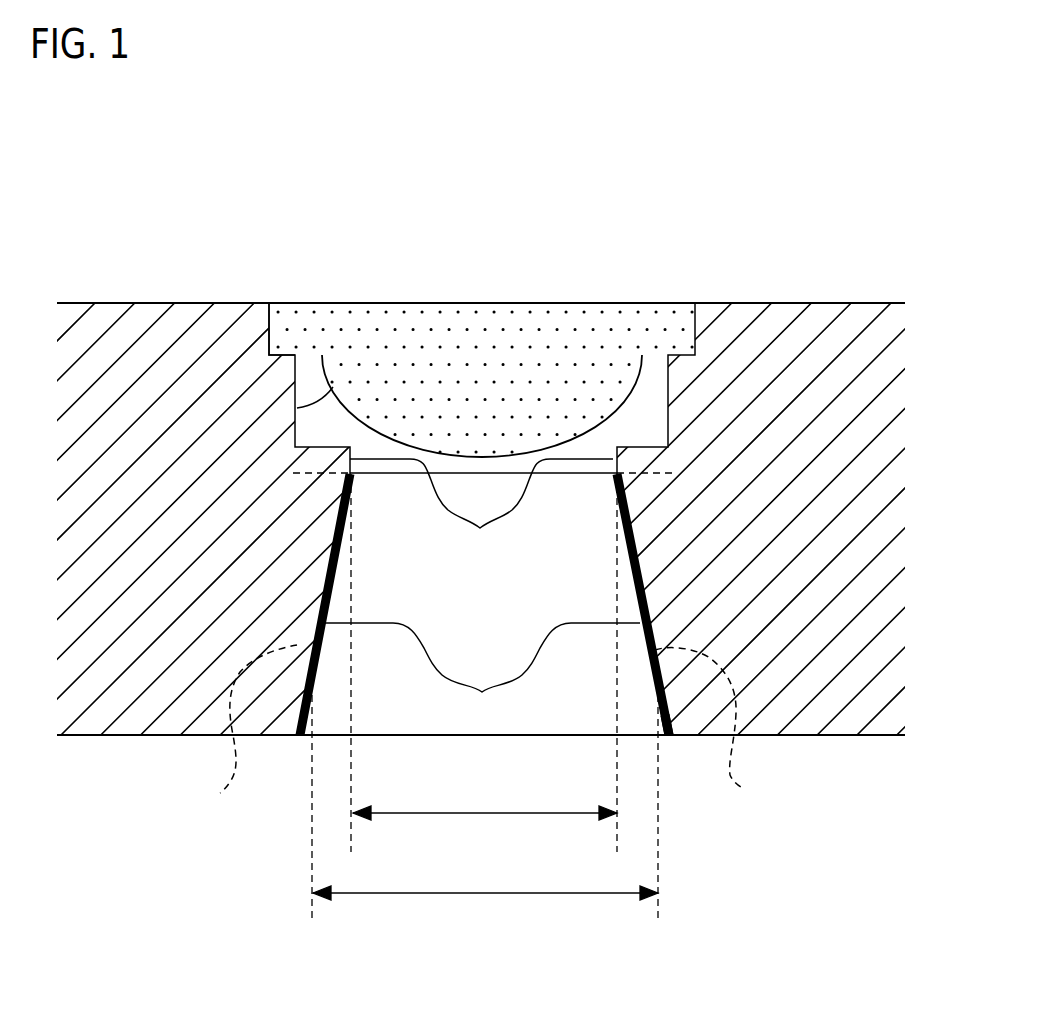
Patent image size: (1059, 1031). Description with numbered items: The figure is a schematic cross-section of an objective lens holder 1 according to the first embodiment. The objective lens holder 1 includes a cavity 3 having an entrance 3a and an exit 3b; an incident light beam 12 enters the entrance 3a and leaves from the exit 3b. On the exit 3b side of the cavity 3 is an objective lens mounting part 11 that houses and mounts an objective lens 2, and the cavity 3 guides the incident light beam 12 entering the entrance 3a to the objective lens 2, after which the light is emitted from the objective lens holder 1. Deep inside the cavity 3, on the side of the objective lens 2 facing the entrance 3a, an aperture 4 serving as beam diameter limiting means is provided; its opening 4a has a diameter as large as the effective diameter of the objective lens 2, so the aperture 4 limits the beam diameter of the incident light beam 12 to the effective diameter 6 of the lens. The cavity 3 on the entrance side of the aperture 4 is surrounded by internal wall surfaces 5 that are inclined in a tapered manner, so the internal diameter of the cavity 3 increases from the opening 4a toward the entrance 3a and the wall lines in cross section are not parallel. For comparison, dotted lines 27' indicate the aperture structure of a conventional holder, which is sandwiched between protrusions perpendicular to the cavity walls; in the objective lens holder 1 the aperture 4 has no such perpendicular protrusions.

The objective lens holder 1 is at (815, 312).
The objective lens 2 is at (490, 312).
The cavity 3 is at (647, 680).
The entrance 3a is at (655, 728).
The exit 3b is at (276, 337).
The aperture 4 is at (636, 438).
The opening 4a is at (481, 512).
The internal wall surfaces 5 is at (482, 675).
The effective diameter 6 is at (487, 813).
The objective lens mounting part 11 is at (337, 385).
The incident light beam 12 is at (487, 893).
The dotted lines 27' is at (482, 738).